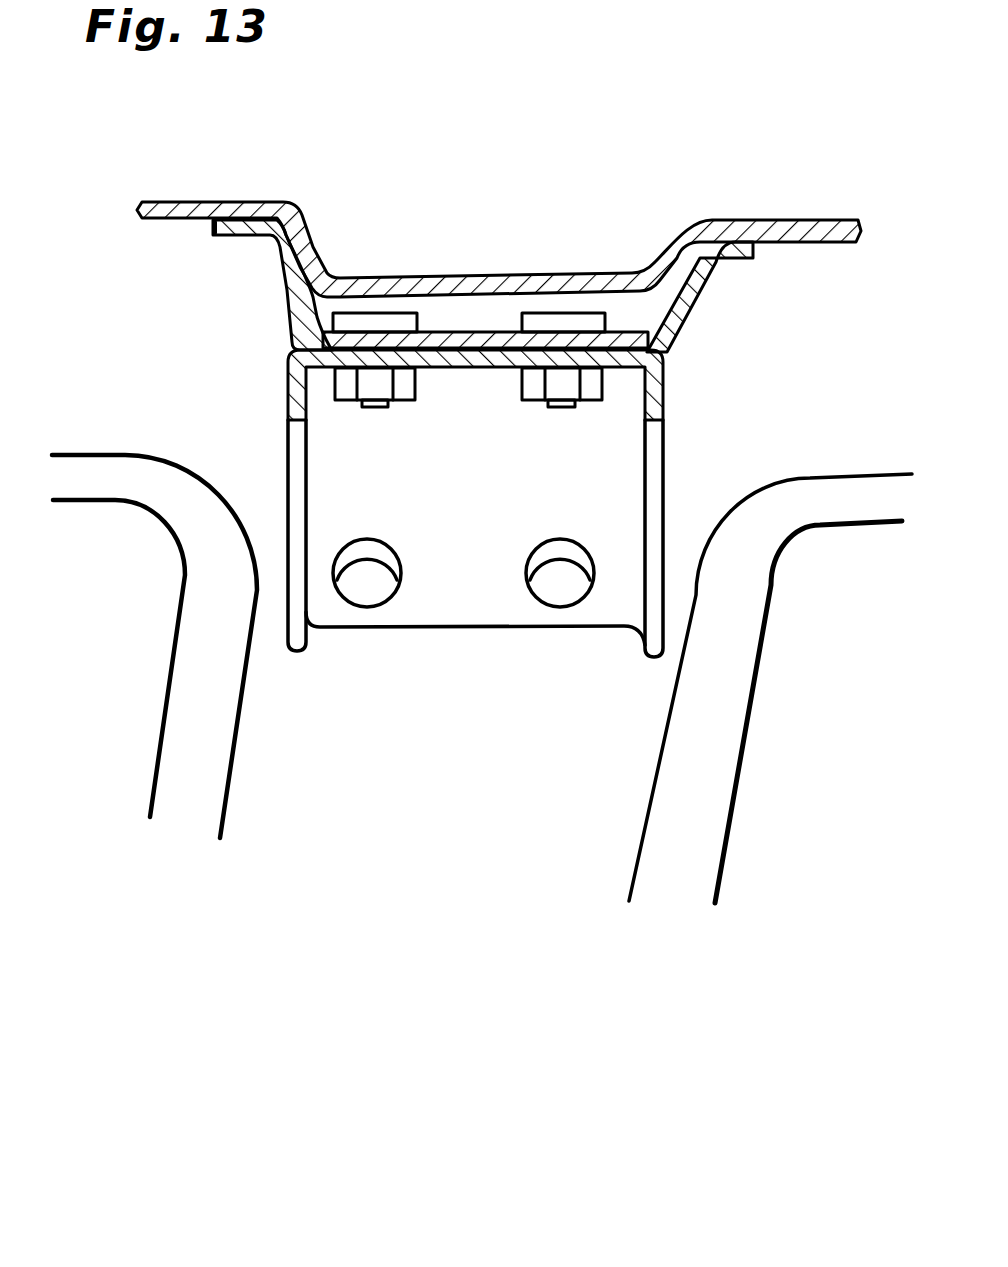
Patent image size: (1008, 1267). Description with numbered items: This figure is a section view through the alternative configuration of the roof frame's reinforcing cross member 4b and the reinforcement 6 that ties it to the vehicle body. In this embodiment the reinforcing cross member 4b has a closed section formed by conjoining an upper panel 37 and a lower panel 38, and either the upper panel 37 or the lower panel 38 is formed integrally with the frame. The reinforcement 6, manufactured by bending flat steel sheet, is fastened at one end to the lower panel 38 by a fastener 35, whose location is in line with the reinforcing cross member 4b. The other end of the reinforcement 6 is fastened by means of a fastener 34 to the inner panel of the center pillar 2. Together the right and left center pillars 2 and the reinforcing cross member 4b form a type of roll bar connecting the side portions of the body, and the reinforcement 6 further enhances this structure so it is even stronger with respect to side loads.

The center pillar 2 is at (796, 759).
The reinforcing cross member 4b is at (767, 328).
The reinforcement 6 is at (698, 450).
The fastener 34 is at (373, 653).
The fastener 35 is at (403, 430).
The upper panel 37 is at (432, 277).
The lower panel 38 is at (477, 345).